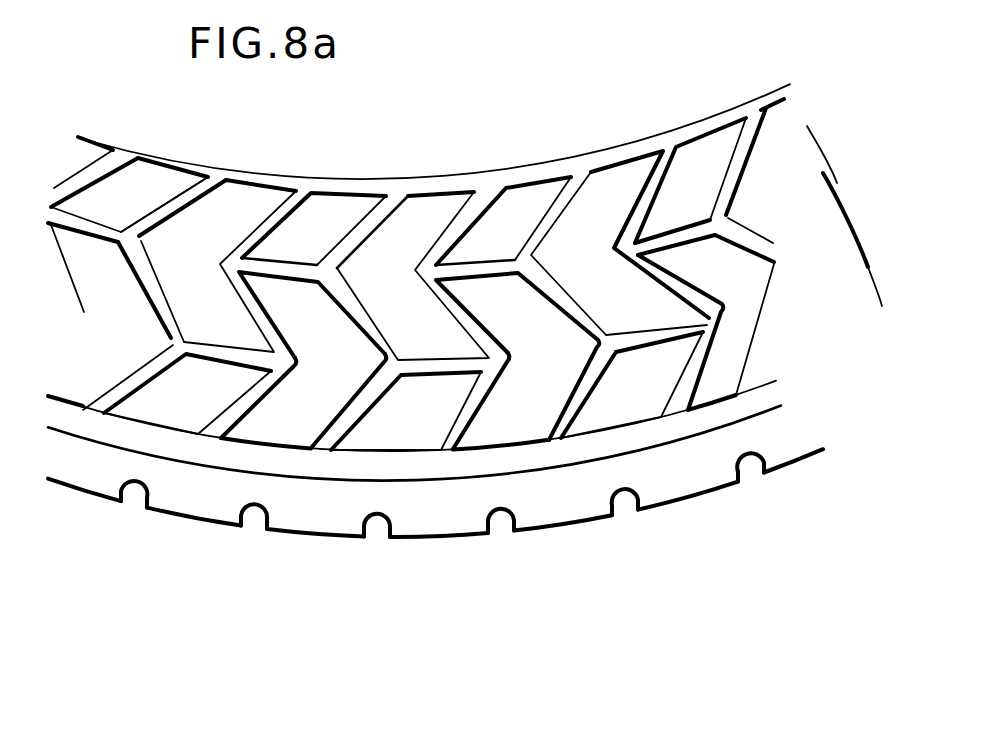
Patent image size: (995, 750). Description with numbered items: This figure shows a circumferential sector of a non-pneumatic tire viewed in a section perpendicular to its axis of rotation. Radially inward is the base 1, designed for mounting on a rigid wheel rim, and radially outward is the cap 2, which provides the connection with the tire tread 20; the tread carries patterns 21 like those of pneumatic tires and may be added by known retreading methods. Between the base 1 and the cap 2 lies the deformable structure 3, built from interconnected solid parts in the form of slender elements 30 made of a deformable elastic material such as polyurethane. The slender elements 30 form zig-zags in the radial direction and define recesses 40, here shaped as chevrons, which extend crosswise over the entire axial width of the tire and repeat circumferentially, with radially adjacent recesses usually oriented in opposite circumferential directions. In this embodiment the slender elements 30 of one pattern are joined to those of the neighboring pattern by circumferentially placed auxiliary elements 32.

The base 1 is at (766, 82).
The cap 2 is at (773, 401).
The deformable structure 3 is at (843, 183).
The tire tread 20 is at (288, 541).
The patterns 21 is at (502, 517).
The slender elements 30 is at (155, 289).
The auxiliary elements 32 is at (673, 221).
The recesses 40 is at (332, 221).